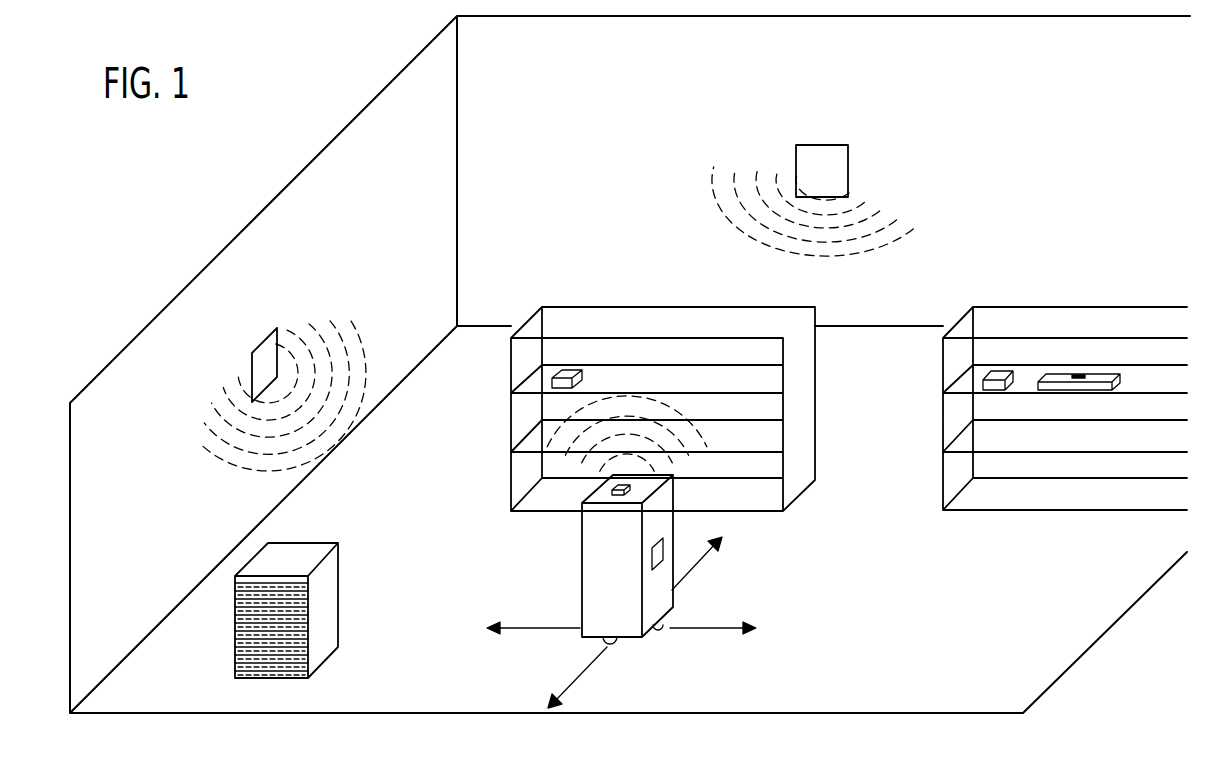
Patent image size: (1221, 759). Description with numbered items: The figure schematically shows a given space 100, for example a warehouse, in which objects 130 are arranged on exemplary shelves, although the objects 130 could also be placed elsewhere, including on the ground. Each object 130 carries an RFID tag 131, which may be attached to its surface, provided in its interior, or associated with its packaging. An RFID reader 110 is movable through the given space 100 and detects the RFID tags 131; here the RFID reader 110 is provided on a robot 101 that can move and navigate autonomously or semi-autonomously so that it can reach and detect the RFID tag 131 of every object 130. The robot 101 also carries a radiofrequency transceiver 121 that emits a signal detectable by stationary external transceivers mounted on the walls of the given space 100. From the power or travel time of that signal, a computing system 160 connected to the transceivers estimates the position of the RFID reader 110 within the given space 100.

The given space 100 is at (173, 251).
The robot 101 is at (621, 591).
The RFID reader 110 is at (617, 497).
The radiofrequency transceiver associated with the RFID reader 121 is at (658, 567).
The object 130 is at (515, 314).
The RFID tag 131 is at (541, 366).
The computing system 160 is at (332, 563).